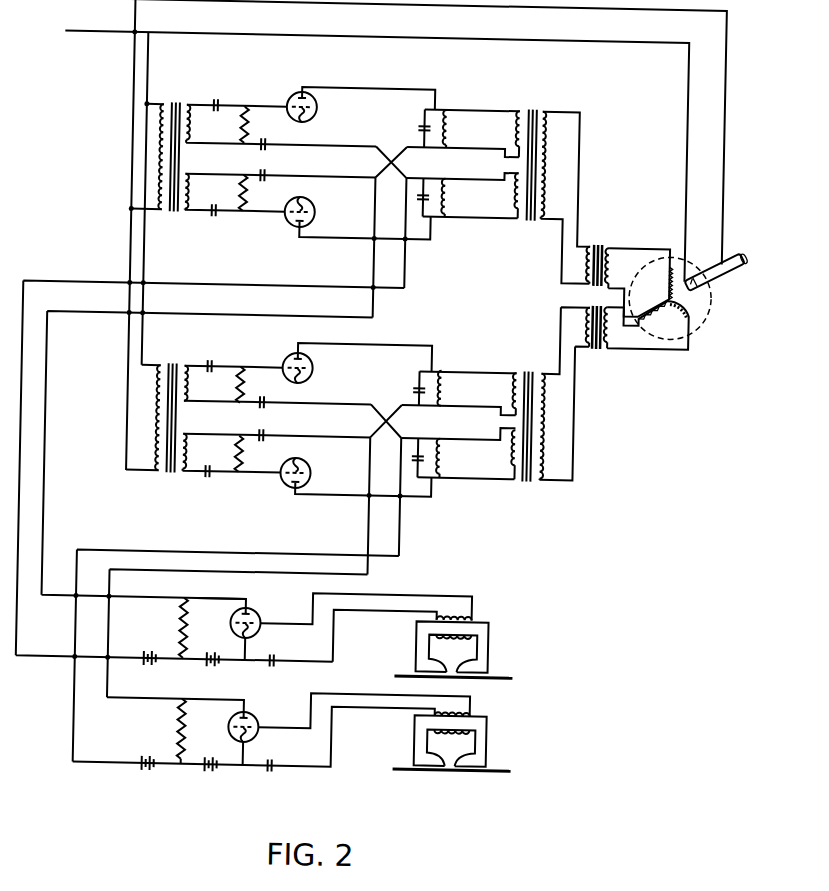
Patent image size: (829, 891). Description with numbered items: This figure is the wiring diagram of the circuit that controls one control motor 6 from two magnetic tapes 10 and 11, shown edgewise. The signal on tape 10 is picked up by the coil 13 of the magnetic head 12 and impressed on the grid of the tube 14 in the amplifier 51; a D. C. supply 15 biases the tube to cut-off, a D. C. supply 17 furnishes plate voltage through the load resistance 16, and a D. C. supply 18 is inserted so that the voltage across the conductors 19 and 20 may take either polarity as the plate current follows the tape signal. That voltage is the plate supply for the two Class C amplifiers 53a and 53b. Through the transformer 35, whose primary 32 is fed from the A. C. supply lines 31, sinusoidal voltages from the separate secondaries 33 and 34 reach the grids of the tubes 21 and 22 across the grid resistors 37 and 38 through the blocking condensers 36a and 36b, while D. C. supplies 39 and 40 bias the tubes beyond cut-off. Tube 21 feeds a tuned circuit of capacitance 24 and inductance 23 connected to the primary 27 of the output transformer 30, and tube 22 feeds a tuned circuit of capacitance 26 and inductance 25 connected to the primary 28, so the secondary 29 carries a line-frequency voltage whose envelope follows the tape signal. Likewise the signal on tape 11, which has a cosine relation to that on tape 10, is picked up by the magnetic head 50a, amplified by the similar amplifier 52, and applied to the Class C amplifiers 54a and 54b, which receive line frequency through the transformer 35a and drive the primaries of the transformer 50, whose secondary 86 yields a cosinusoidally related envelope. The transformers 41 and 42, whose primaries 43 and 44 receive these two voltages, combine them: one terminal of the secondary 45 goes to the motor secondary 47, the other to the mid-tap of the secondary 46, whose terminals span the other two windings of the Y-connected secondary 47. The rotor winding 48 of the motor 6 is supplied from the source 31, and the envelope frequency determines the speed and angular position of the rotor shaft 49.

The control motor 6 is at (704, 315).
The magnetic tape 10 is at (507, 675).
The magnetic tape 11 is at (507, 770).
The magnetic head 12 is at (497, 631).
The coil 13 is at (475, 613).
The tube 14 is at (260, 615).
The D. C. supply 15 is at (288, 661).
The load resistance 16 is at (184, 627).
The D. C. supply 17 is at (212, 674).
The D. C. supply 18 is at (153, 671).
The conductor 19 is at (47, 447).
The conductor 20 is at (28, 507).
The tube 21 is at (289, 95).
The tube 22 is at (291, 230).
The inductance 23 is at (447, 143).
The capacitance 24 is at (414, 128).
The inductance 25 is at (448, 211).
The capacitance 26 is at (416, 201).
The primary 27 is at (512, 111).
The primary 28 is at (509, 218).
The secondary 29 is at (544, 134).
The output transformer 30 is at (539, 105).
The A. C. supply lines 31 is at (65, 33).
The primary winding of input transformer 32 is at (157, 106).
The secondary 33 is at (183, 116).
The secondary 34 is at (188, 218).
The transformer 35 is at (172, 104).
The transformer 35a is at (183, 370).
The blocking condenser 36a is at (212, 106).
The blocking condenser 36b is at (213, 220).
The grid resistor 37 is at (233, 134).
The grid resistor 38 is at (234, 203).
The D. C. supply voltage 39 is at (259, 145).
The D. C. supply voltage 40 is at (259, 186).
The transformer 41 is at (598, 238).
The transformer 42 is at (601, 347).
The primary winding of pickup transformer 43 is at (584, 267).
The primary winding of pickup transformer 44 is at (585, 328).
The secondary 45 is at (610, 263).
The secondary 46 is at (611, 342).
The motor secondary 47 is at (652, 308).
The winding 48 is at (688, 276).
The rotor shaft 49 is at (743, 250).
The transformer 50 is at (529, 481).
The magnetic head 50a is at (499, 732).
The amplifier 51 is at (232, 601).
The amplifier 52 is at (244, 706).
The Class C amplifier 53a is at (321, 88).
The Class C amplifier 53b is at (407, 242).
The Class C amplifier 54a is at (413, 345).
The Class C amplifier 54b is at (428, 497).
The secondary 86 is at (549, 459).